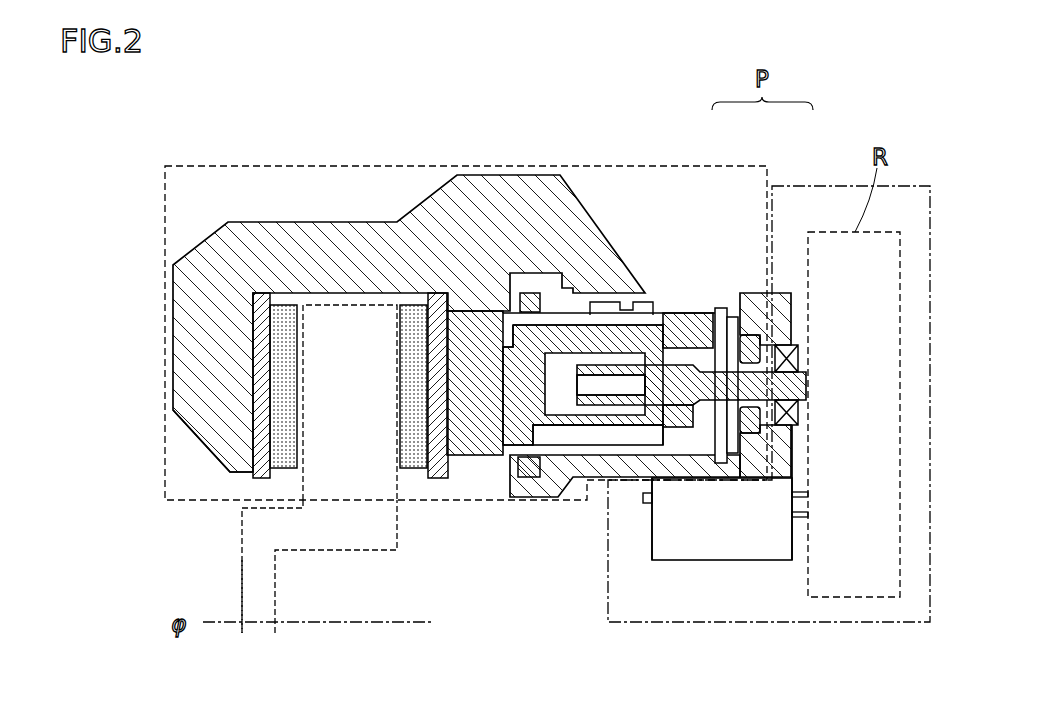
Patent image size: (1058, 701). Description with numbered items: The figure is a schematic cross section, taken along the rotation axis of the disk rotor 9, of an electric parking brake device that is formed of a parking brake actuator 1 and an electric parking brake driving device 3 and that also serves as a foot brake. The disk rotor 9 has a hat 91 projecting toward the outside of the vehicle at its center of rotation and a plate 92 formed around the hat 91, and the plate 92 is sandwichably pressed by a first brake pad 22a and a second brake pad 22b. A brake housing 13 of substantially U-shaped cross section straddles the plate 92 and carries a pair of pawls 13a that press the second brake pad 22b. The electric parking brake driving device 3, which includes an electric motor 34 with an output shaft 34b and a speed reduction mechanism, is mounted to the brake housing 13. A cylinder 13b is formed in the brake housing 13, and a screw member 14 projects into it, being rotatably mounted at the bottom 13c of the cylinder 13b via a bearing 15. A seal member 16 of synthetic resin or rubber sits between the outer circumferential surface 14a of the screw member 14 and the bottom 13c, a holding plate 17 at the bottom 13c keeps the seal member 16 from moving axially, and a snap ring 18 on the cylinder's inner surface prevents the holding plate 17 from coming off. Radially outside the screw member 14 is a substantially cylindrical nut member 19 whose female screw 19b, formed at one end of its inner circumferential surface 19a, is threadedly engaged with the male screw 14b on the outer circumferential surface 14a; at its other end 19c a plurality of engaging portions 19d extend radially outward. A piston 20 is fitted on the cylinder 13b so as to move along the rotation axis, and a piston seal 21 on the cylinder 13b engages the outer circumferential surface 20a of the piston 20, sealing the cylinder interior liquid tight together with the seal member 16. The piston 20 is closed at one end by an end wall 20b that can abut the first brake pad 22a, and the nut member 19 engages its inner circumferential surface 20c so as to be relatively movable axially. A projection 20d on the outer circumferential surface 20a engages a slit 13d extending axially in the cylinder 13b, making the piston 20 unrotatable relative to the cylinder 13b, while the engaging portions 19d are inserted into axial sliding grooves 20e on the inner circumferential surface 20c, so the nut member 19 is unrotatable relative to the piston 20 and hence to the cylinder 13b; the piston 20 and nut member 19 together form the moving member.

The parking brake actuator 1 is at (713, 163).
The electric parking brake driving device 3 is at (815, 186).
The disk rotor 9 is at (355, 533).
The hat 91 is at (250, 587).
The plate 92 is at (350, 313).
The brake housing 13 is at (240, 230).
The pawls 13a is at (222, 435).
The cylinder 13b is at (580, 477).
The bottom 13c is at (790, 560).
The slit 13d is at (657, 292).
The screw member 14 is at (725, 308).
The outer circumferential surface 14a is at (700, 360).
The male screw 14b is at (627, 480).
The bearing 15 is at (798, 345).
The seal member 16 is at (753, 335).
The holding plate 17 is at (745, 480).
The snap ring 18 is at (690, 480).
The nut member 19 is at (497, 500).
The inner circumferential surface 19a is at (577, 325).
The female screw 19b is at (668, 305).
The end 19c is at (540, 330).
The engaging portions 19d is at (493, 340).
The piston 20 is at (450, 450).
The outer circumferential surface 20a is at (465, 317).
The end wall 20b is at (428, 300).
The inner circumferential surface 20c is at (597, 327).
The projection 20d is at (617, 300).
The sliding grooves 20e is at (562, 345).
The piston seal 21 is at (523, 470).
The first brake pad 22a is at (407, 293).
The second brake pad 22b is at (296, 305).
The electric motor 34 is at (790, 560).
The output shaft 34b is at (808, 520).